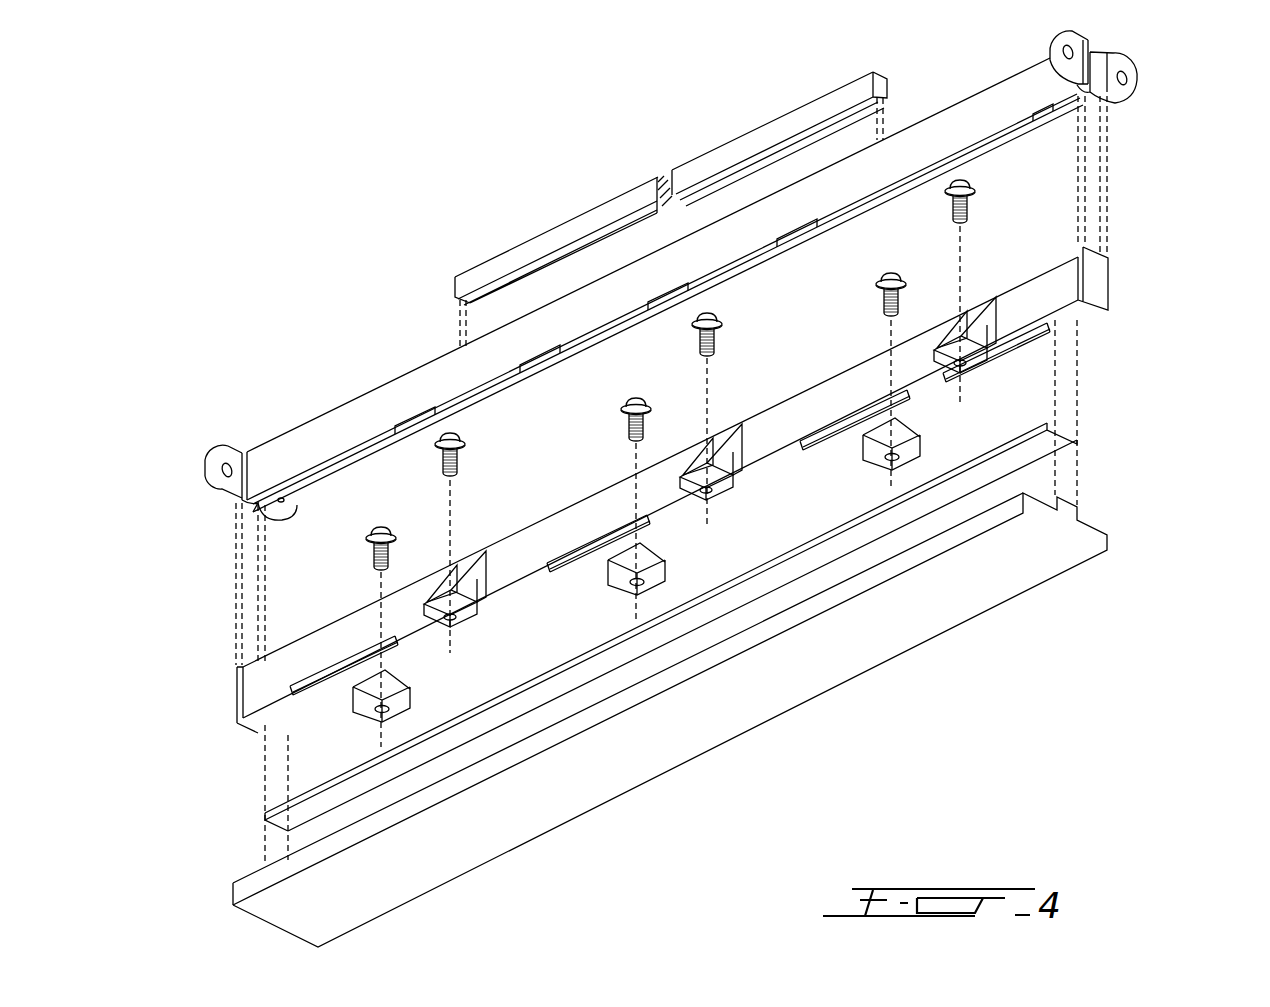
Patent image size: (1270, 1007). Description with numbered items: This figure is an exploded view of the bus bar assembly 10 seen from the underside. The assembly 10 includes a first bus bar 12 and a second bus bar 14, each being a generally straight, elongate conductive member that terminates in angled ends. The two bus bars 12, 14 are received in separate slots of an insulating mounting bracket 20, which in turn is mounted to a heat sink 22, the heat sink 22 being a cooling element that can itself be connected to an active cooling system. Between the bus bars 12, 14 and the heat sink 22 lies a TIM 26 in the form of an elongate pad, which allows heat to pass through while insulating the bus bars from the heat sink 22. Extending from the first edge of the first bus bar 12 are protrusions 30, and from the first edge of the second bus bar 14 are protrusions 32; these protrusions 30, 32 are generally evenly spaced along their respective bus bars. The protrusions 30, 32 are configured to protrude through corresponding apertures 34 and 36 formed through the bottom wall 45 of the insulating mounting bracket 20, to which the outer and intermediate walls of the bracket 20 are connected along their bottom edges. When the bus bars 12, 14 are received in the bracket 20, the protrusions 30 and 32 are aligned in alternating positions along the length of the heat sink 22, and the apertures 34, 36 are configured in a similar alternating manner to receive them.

The bus bar assembly 10 is at (268, 210).
The first bus bar 12 is at (1075, 33).
The second bus bar 14 is at (1136, 84).
The insulating mounting bracket 20 is at (1050, 290).
The heat sink 22 is at (1050, 556).
The TIM 26 is at (1047, 440).
The protrusions 30 is at (828, 220).
The protrusions 32 is at (752, 270).
The apertures 34 is at (838, 427).
The apertures 36 is at (757, 480).
The bottom wall 45 is at (548, 578).